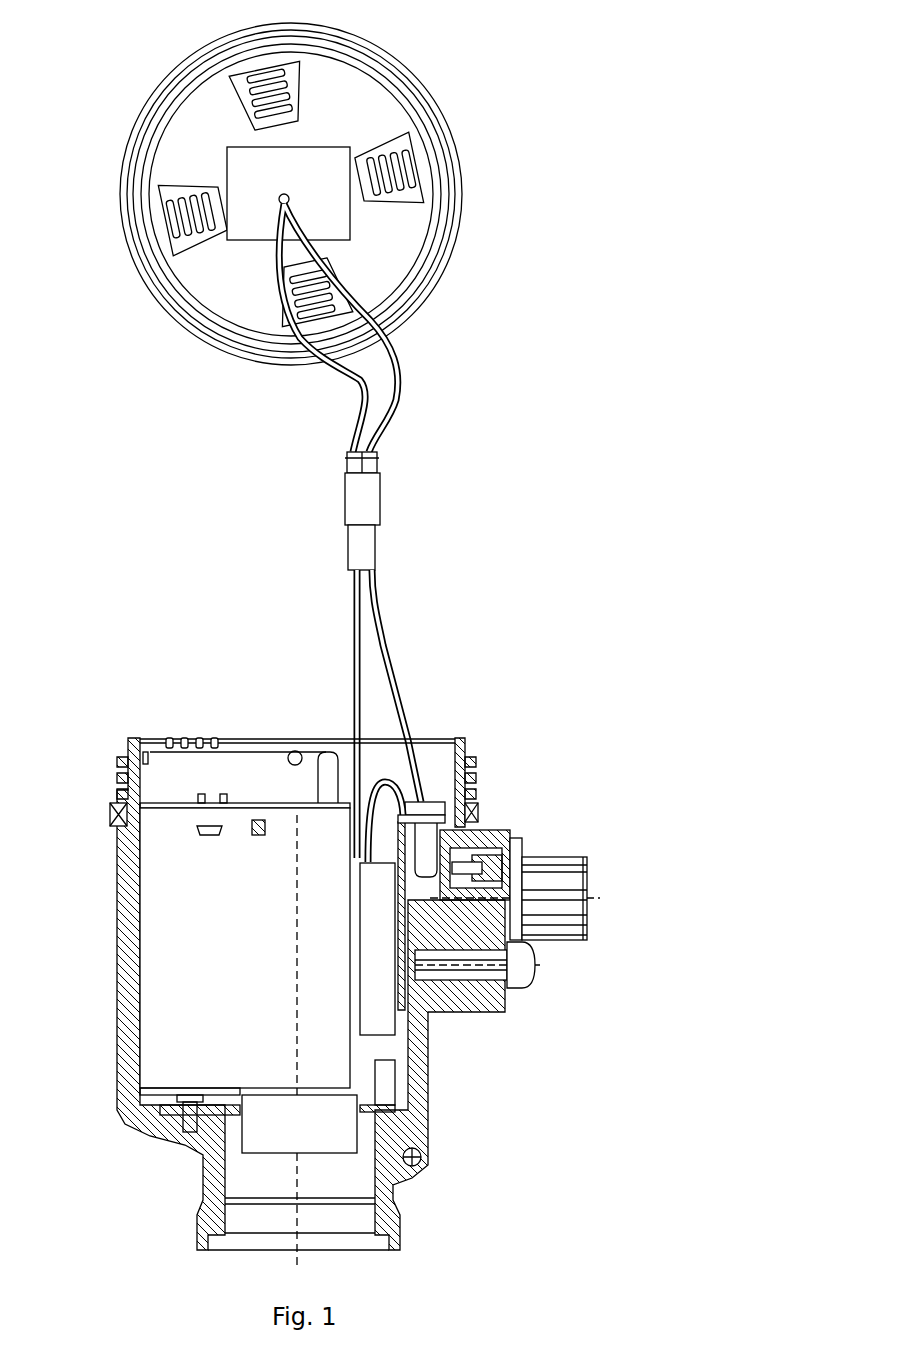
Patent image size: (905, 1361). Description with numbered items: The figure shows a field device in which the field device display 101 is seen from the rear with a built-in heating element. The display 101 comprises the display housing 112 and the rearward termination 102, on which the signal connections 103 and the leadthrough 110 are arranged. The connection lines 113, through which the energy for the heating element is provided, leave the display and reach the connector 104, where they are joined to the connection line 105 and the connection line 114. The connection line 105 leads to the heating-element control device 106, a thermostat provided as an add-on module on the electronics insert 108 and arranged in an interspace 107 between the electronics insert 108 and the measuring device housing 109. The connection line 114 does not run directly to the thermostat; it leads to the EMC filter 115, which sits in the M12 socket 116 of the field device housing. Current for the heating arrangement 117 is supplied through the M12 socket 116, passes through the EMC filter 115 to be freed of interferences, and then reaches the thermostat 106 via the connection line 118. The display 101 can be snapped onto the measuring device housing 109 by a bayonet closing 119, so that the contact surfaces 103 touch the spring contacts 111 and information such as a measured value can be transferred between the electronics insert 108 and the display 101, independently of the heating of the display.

The field device display 101 is at (468, 58).
The rearward termination 102 is at (403, 240).
The signal connections 103 is at (290, 193).
The connector 104 is at (402, 507).
The connection line 105 is at (352, 636).
The heating-element control device 106 is at (430, 1048).
The interspace 107 is at (430, 746).
The electronics insert 108 is at (128, 943).
The measuring device housing 109 is at (104, 1136).
The leadthrough 110 is at (288, 193).
The spring contacts 111 is at (180, 727).
The display housing 112 is at (150, 312).
The connection lines 113 is at (415, 365).
The connection line 114 is at (395, 626).
The EMC filter 115 is at (487, 838).
The M12 socket 116 is at (548, 848).
The heating arrangement 117 is at (320, 542).
The connection line 118 is at (372, 768).
The bayonet closing 119 is at (108, 760).